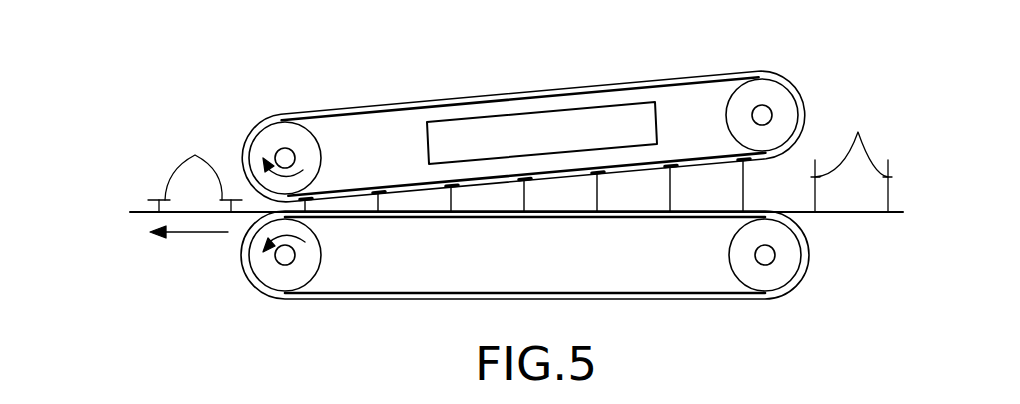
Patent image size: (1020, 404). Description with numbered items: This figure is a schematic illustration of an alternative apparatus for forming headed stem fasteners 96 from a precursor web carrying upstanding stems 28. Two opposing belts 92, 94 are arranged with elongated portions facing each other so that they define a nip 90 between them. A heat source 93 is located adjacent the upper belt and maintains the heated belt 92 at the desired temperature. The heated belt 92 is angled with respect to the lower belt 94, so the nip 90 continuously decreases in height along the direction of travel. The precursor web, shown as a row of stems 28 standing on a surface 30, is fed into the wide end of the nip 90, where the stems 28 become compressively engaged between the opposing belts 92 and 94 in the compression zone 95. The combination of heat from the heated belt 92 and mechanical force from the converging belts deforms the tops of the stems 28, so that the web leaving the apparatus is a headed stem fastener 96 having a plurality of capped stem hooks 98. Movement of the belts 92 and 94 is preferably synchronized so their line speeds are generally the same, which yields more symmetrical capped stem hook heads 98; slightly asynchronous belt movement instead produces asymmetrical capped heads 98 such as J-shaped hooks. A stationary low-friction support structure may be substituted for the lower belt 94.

The stems 28 is at (851, 158).
The support surface 30 is at (860, 218).
The nip 90 is at (813, 140).
The heated belt 92 is at (354, 109).
The heat source 93 is at (540, 113).
The belt 94 is at (355, 300).
The compression zone 95 is at (762, 92).
The headed stem fastener 96 is at (132, 130).
The capped stem hooks 98 is at (195, 169).